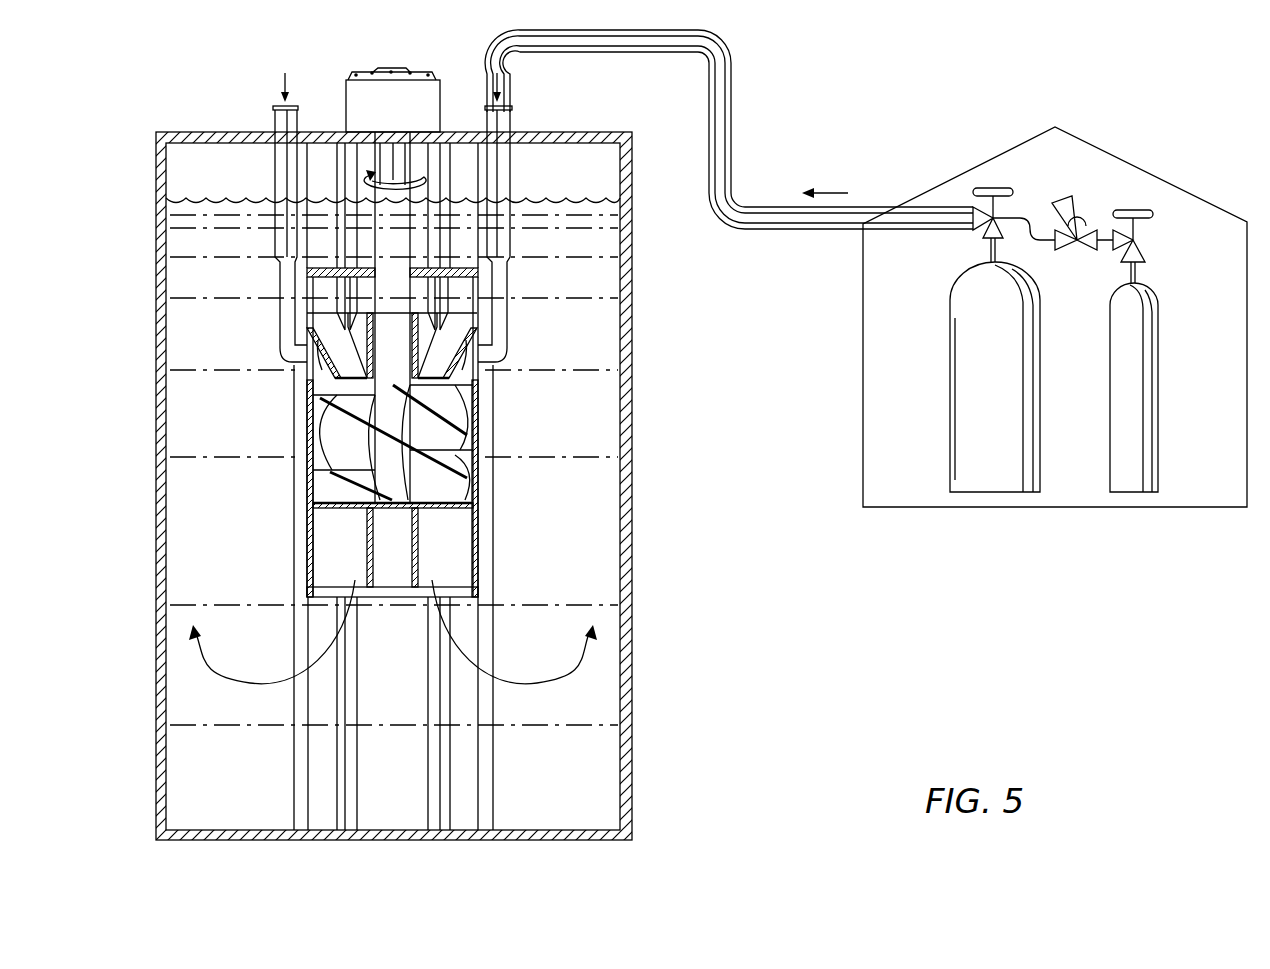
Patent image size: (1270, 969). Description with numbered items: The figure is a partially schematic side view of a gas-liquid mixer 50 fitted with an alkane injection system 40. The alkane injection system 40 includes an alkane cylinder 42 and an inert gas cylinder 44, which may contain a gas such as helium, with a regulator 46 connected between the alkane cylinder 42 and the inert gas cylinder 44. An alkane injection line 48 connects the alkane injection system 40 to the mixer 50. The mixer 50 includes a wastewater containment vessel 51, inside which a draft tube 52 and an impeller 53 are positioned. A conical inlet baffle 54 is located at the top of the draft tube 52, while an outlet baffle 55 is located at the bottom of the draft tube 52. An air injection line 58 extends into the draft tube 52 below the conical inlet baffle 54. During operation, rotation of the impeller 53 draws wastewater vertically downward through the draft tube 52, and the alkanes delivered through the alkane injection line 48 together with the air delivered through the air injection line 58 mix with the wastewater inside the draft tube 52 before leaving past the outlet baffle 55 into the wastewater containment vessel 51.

The alkane injection system 40 is at (1125, 122).
The alkane cylinder 42 is at (968, 417).
The inert gas cylinder 44 is at (1127, 423).
The regulator 46 is at (1075, 206).
The alkane injection line 48 is at (727, 100).
The gas-liquid mixer 50 is at (561, 100).
The wastewater containment vessel 51 is at (628, 360).
The draft tube 52 is at (478, 430).
The impeller 53 is at (455, 457).
The conical inlet baffle 54 is at (470, 332).
The outlet baffle 55 is at (467, 540).
The air injection line 58 is at (288, 118).